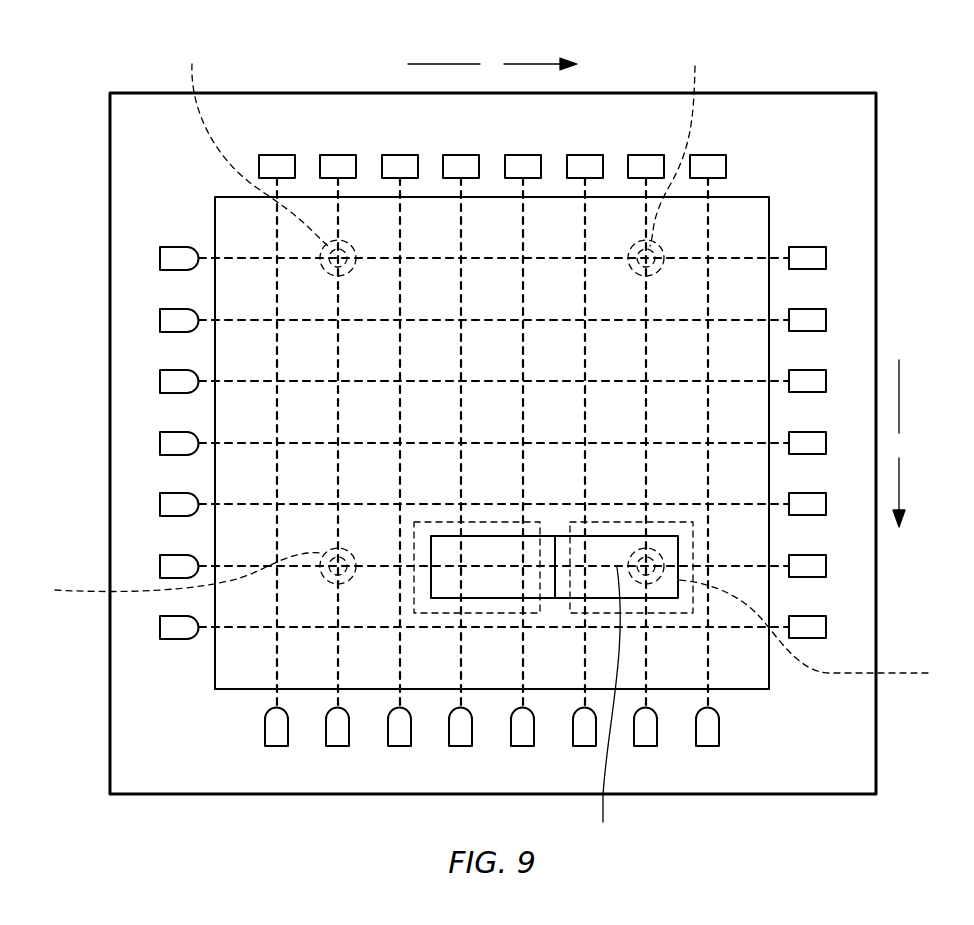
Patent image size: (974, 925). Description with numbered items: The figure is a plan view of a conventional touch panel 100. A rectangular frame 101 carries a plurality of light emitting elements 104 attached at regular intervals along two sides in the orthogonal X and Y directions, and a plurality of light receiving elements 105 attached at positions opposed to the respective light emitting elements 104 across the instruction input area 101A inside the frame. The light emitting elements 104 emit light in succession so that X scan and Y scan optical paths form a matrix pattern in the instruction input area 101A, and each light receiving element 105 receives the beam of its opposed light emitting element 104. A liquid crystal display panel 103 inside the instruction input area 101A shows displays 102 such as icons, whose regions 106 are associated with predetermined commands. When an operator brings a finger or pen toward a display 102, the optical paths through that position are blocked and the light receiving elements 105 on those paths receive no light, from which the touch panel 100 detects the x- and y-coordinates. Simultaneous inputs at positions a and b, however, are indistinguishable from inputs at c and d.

The touch panel 100 is at (862, 50).
The rectangular frame 101 is at (865, 153).
The instruction input area 101A is at (737, 343).
The display 102 is at (477, 598).
The liquid crystal display panel 103 is at (603, 224).
The light emitting element 104 is at (160, 393).
The light receiving element 105 is at (400, 155).
The region 106 is at (420, 598).